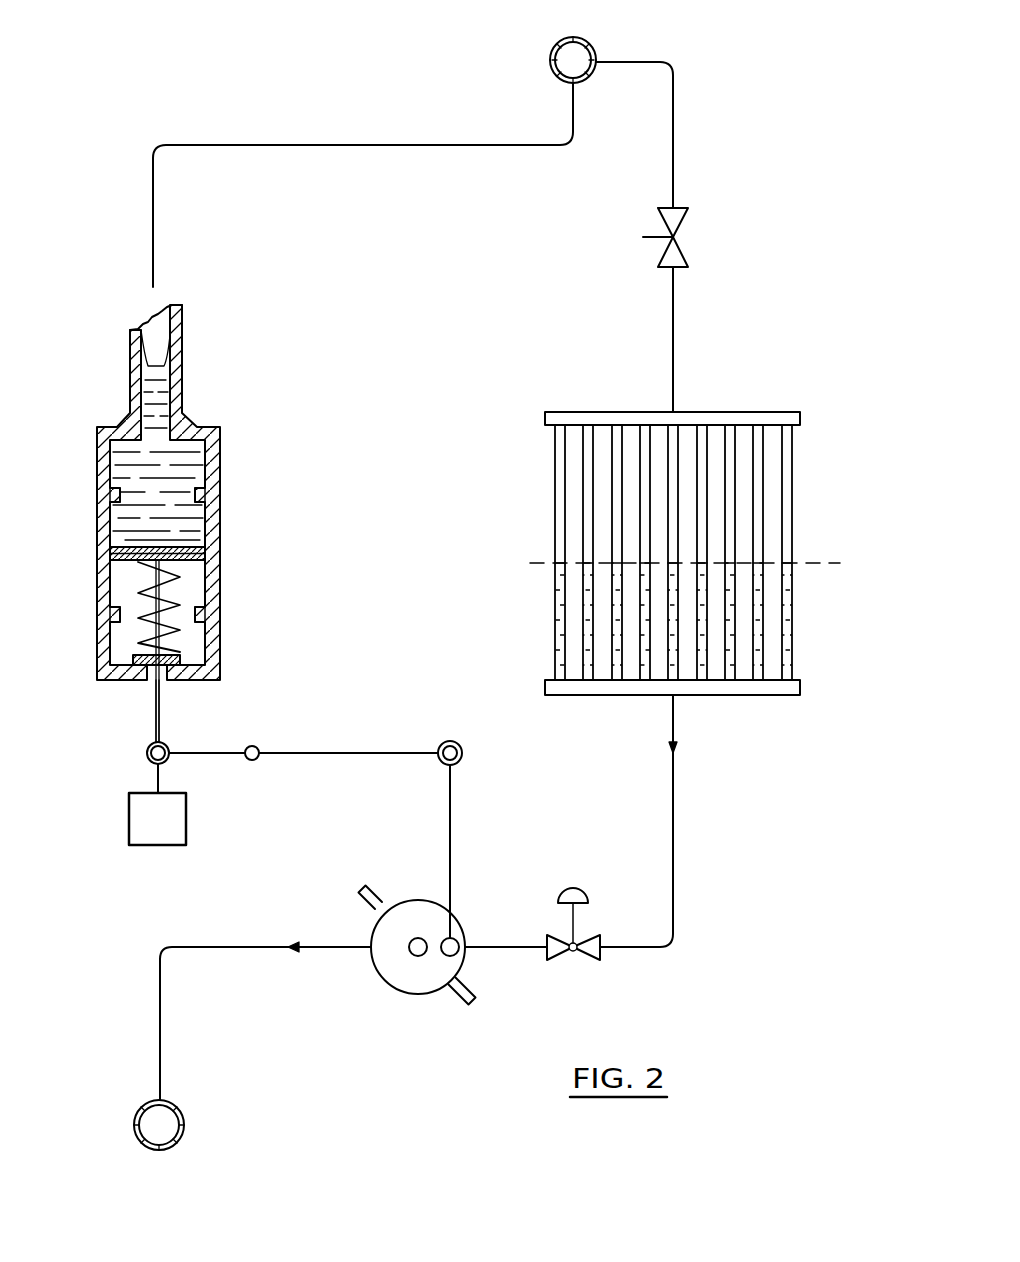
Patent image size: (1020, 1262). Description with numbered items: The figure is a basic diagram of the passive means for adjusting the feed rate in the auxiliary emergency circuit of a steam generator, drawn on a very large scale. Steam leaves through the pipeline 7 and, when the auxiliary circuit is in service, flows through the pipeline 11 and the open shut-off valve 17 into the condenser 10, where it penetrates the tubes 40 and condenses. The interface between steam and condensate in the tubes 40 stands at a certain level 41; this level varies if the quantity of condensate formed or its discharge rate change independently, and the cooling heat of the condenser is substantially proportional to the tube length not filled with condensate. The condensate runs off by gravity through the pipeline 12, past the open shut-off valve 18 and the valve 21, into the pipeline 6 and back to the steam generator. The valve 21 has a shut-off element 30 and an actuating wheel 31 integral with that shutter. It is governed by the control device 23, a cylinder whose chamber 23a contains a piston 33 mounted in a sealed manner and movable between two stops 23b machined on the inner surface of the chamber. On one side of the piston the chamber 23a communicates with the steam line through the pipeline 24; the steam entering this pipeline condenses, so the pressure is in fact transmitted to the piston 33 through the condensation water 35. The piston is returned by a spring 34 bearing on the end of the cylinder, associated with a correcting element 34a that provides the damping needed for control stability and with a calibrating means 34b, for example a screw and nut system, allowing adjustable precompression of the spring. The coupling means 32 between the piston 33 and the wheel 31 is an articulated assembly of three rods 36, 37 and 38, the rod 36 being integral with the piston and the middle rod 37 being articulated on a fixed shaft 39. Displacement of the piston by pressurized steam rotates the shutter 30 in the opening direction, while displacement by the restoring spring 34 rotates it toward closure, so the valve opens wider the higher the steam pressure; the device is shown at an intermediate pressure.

The pipeline 6 is at (146, 1108).
The pipeline 7 is at (598, 49).
The condenser 10 is at (691, 524).
The pipeline 11 is at (675, 150).
The pipeline 12 is at (675, 770).
The shut-off valve 17 is at (686, 233).
The shut-off valve 18 is at (574, 954).
The valve 21 is at (377, 991).
The control device 23 is at (92, 499).
The chamber 23a is at (220, 455).
The stops 23b is at (203, 495).
The pipeline 24 is at (367, 147).
The shut-off element 30 is at (464, 1001).
The actuating wheel 31 is at (422, 897).
The coupling means 32 is at (380, 748).
The piston 33 is at (195, 548).
The spring 34 is at (135, 602).
The correcting element 34a is at (188, 820).
The calibrating means 34b is at (180, 657).
The condensation water 35 is at (149, 463).
The rod 36 is at (162, 712).
The rod 37 is at (313, 757).
The rod 38 is at (452, 810).
The fixed shaft 39 is at (257, 747).
The tubes 40 is at (758, 458).
The level 41 is at (813, 564).